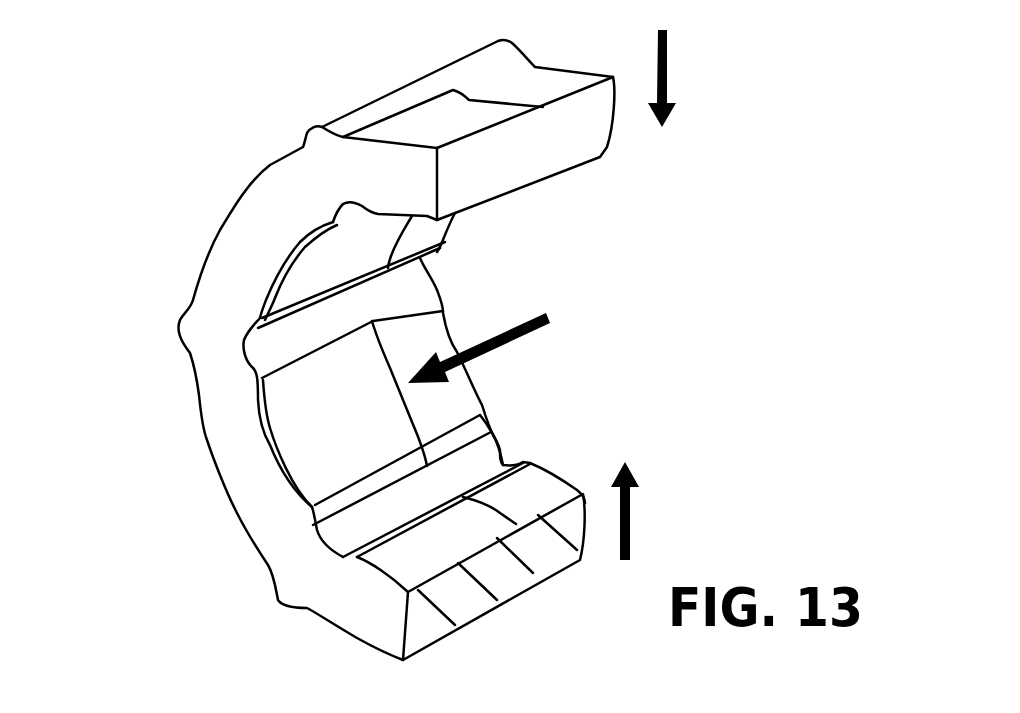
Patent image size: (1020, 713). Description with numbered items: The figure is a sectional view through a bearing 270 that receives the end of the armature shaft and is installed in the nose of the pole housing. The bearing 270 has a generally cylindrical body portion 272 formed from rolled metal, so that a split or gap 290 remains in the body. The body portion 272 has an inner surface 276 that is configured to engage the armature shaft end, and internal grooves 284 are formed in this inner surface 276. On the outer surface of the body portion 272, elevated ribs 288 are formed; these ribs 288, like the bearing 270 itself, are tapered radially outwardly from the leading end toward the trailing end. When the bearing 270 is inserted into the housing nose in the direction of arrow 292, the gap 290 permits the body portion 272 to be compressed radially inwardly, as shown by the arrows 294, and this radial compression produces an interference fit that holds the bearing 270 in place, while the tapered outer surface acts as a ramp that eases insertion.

The bearing 270 is at (173, 207).
The body portion 272 is at (252, 180).
The inner surface 276 is at (328, 423).
The internal grooves 284 is at (355, 525).
The elevated ribs 288 is at (483, 52).
The split or gap 290 is at (520, 155).
The arrow 292 is at (505, 338).
The arrows 294 is at (667, 80).